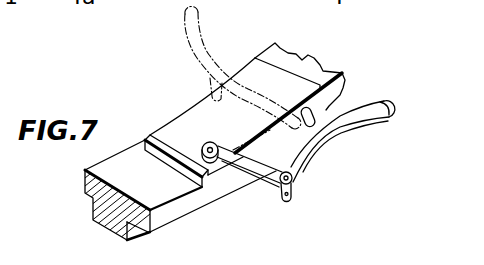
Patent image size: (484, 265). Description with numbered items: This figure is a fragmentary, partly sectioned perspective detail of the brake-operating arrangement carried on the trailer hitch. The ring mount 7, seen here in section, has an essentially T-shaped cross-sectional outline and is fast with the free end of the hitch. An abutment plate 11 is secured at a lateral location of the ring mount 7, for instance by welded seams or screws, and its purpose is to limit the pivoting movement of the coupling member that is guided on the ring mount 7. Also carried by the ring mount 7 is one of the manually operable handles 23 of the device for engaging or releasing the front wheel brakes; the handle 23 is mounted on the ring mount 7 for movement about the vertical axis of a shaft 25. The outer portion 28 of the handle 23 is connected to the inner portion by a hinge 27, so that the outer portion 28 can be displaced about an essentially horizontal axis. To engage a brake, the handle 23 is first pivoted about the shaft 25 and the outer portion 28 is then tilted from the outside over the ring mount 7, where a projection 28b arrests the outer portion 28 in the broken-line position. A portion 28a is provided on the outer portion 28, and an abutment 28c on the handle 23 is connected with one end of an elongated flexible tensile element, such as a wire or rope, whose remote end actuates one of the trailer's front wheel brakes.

The ring mount 7 is at (168, 192).
The abutment plate 11 is at (162, 135).
The handle 23 is at (268, 189).
The shaft 25 is at (205, 140).
The hinge 27 is at (292, 188).
The outer portion 28 is at (302, 152).
The portion 28a is at (374, 111).
The projection 28b is at (316, 87).
The abutment 28c is at (287, 199).